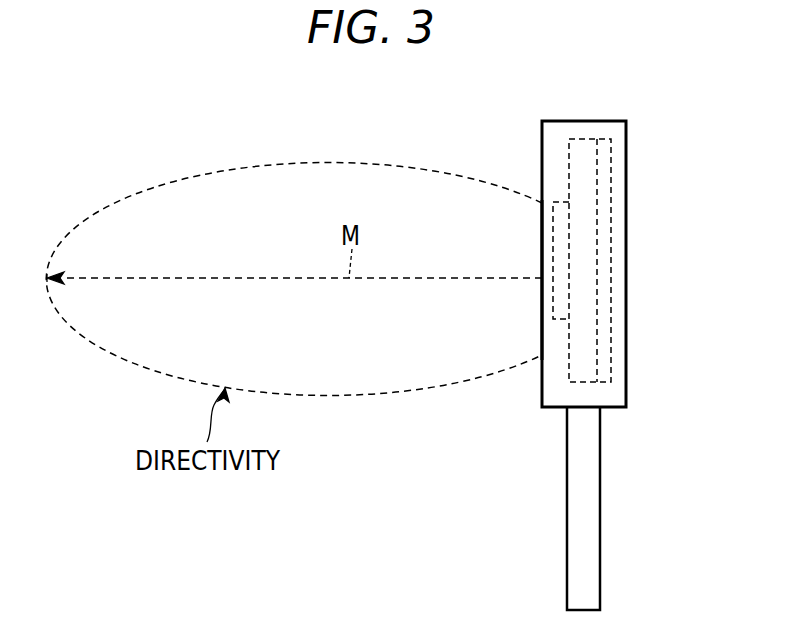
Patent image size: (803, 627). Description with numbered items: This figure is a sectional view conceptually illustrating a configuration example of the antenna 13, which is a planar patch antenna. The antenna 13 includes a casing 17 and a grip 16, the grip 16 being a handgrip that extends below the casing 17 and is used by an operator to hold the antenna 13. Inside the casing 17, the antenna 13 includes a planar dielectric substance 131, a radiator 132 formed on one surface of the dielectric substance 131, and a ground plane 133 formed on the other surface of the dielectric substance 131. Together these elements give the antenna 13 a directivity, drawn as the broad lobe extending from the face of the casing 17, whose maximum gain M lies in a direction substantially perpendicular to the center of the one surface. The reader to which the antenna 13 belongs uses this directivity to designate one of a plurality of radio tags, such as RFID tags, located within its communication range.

The antenna 13 is at (588, 121).
The dielectric substance 131 is at (592, 247).
The radiator 132 is at (552, 228).
The ground plane 133 is at (613, 175).
The grip 16 is at (600, 498).
The casing 17 is at (541, 393).